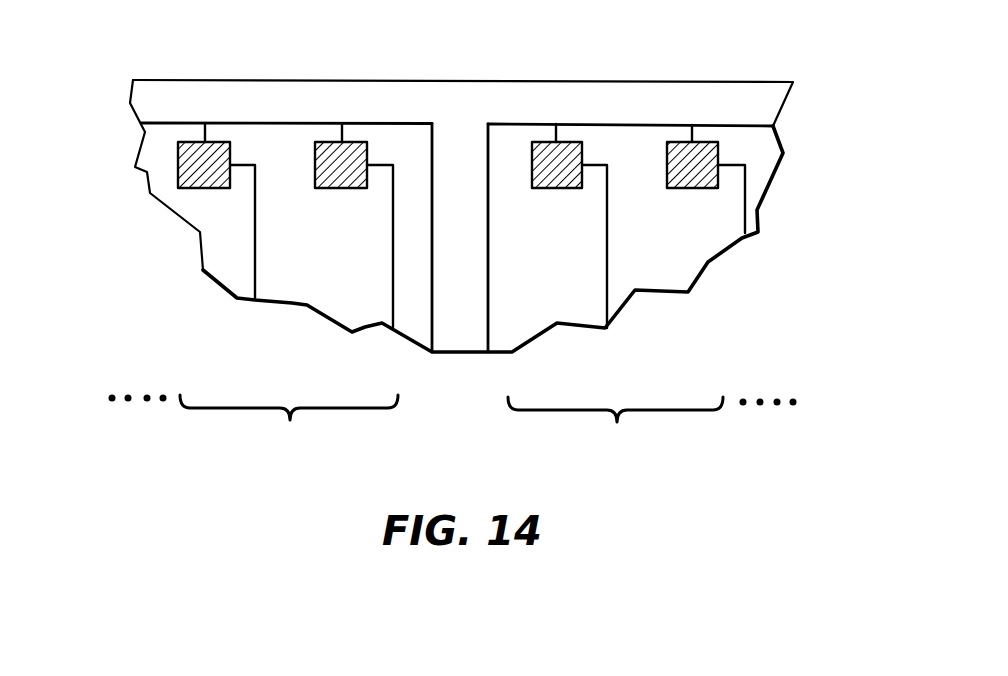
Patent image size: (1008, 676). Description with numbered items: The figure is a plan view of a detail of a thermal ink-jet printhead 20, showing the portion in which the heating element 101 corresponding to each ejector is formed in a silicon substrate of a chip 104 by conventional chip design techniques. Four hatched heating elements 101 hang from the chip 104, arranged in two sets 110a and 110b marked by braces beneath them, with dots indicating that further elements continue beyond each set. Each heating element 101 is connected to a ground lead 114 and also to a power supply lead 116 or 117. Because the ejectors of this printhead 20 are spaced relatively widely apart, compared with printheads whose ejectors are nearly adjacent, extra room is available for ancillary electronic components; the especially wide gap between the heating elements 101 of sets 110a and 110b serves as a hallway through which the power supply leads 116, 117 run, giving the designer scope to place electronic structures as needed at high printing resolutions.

The printhead 20 is at (737, 66).
The chip 104 is at (768, 103).
The power supply lead 116 is at (398, 123).
The power supply lead 117 is at (508, 124).
The heating element 101 is at (205, 188).
The ground lead 114 is at (255, 268).
The set 110a is at (289, 421).
The set 110b is at (615, 422).